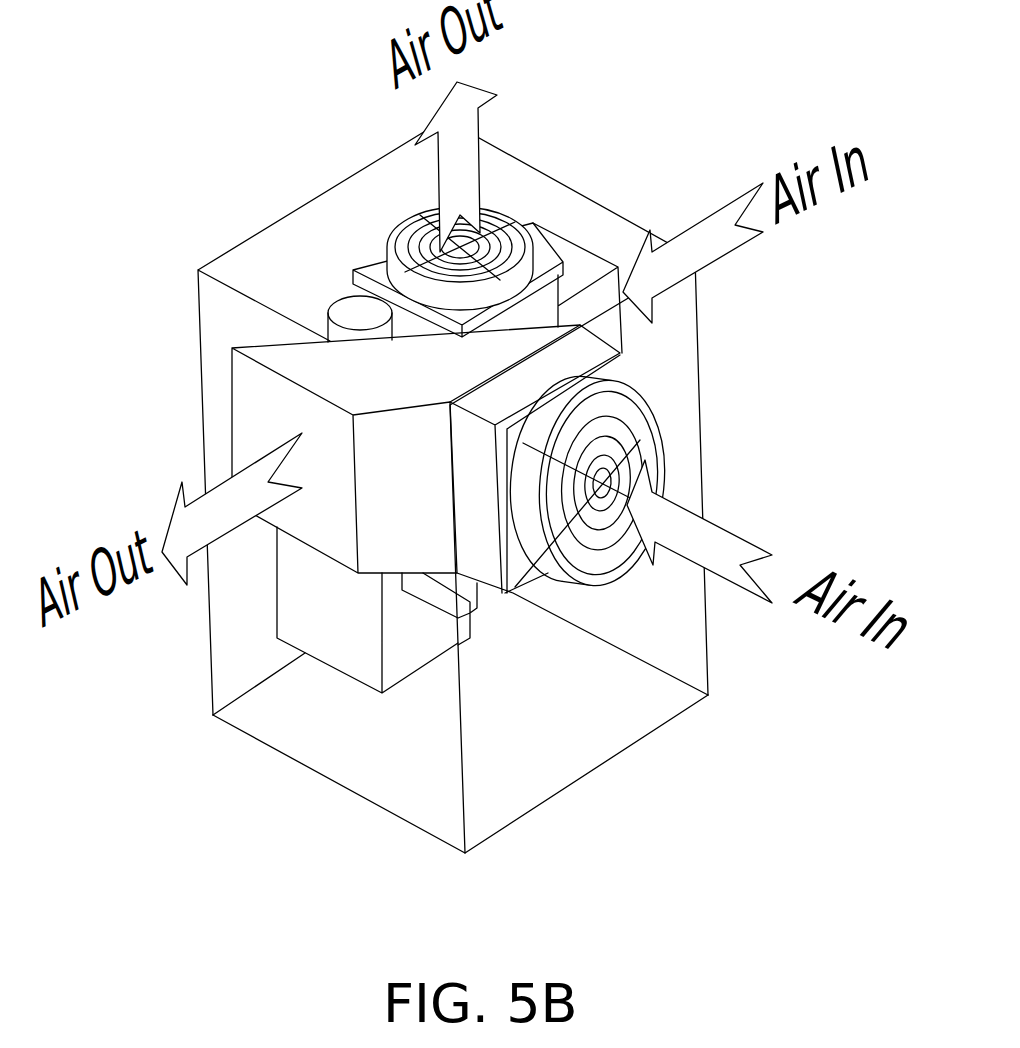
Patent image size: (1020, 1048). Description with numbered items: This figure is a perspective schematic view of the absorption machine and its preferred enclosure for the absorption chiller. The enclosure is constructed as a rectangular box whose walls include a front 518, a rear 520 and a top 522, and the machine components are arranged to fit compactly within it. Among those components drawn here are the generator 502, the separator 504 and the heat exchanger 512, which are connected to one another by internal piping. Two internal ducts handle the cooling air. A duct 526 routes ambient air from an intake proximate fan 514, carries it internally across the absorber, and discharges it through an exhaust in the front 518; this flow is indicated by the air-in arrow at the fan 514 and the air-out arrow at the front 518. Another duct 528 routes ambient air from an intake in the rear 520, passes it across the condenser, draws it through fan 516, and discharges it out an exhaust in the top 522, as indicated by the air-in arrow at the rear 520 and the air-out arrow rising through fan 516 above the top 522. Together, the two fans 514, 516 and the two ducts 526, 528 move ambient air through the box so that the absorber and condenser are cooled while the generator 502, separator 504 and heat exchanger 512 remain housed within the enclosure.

The generator 502 is at (297, 632).
The separator 504 is at (350, 307).
The heat exchanger 512 is at (468, 600).
The fan 514 is at (655, 425).
The fan 516 is at (522, 230).
The front 518 is at (362, 748).
The rear 520 is at (700, 287).
The top 522 is at (362, 187).
The duct 526 is at (296, 362).
The duct 528 is at (592, 270).